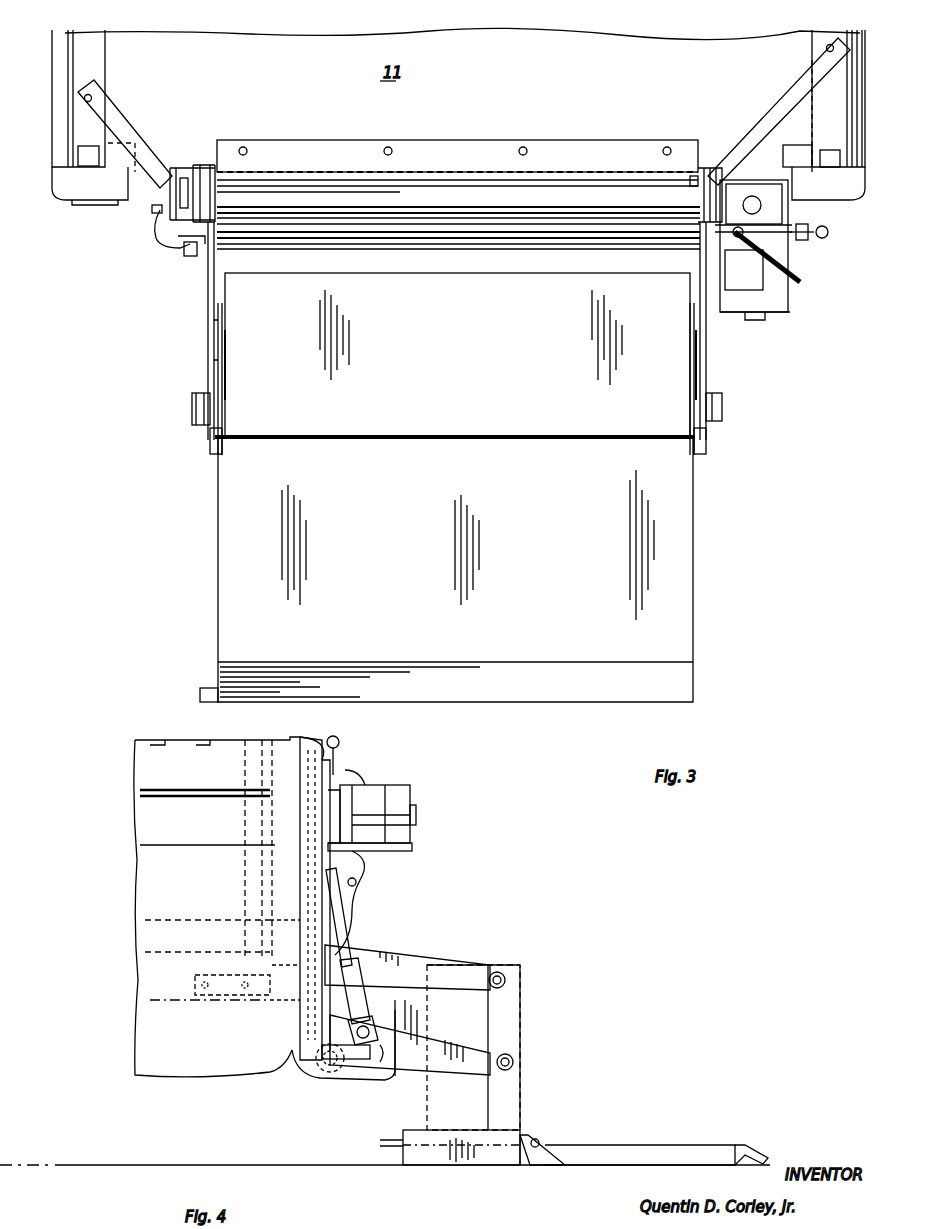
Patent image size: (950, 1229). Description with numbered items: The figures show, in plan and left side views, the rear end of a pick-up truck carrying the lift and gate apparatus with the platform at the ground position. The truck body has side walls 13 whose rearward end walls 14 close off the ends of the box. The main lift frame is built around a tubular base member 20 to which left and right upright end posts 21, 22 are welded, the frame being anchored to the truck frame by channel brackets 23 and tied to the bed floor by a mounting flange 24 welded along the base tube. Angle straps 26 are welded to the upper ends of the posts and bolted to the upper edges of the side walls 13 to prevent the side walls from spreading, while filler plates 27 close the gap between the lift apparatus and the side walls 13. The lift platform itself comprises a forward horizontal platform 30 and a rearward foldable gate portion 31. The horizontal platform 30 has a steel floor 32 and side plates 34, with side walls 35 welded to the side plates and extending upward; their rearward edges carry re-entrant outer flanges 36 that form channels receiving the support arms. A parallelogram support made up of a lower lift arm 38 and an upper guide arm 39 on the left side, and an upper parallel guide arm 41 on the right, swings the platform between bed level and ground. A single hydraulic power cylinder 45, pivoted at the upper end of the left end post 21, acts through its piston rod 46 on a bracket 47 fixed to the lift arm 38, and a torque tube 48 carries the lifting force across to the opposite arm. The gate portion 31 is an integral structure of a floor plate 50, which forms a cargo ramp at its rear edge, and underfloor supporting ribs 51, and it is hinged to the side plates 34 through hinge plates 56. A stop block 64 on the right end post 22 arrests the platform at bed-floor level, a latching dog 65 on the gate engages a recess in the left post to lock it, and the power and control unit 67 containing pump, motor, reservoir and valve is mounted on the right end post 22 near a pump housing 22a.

In FIG. 3, the side walls 13 is at (80, 55).
In FIG. 4, the side walls 13 is at (142, 817).
In FIG. 3, the rearward end walls 14 is at (56, 195).
In FIG. 3, the base member 20 is at (519, 232).
In FIG. 3, the left end post 21 is at (180, 168).
In FIG. 4, the left end post 21 is at (308, 740).
In FIG. 3, the right end post 22 is at (722, 172).
In FIG. 3, the pump housing 22a is at (690, 232).
In FIG. 4, the brackets 23 is at (218, 976).
In FIG. 3, the mounting flange 24 is at (576, 150).
In FIG. 3, the angle straps 26 is at (110, 120).
In FIG. 3, the filler plates 27 is at (203, 165).
In FIG. 3, the horizontal platform 30 is at (216, 341).
In FIG. 4, the horizontal platform 30 is at (494, 1164).
In FIG. 3, the foldable gate portion 31 is at (216, 563).
In FIG. 4, the foldable gate portion 31 is at (616, 1164).
In FIG. 3, the floor 32 is at (446, 292).
In FIG. 4, the floor 32 is at (378, 1142).
In FIG. 3, the side plates 34 is at (226, 318).
In FIG. 4, the side plates 34 is at (426, 1166).
In FIG. 3, the side walls 35 is at (228, 378).
In FIG. 4, the side walls 35 is at (434, 1004).
In FIG. 3, the re-entrant outer flanges 36 is at (204, 426).
In FIG. 4, the re-entrant outer flanges 36 is at (504, 1016).
In FIG. 4, the lower lift arm 38 is at (398, 1080).
In FIG. 3, the upper guide arm 39 is at (206, 300).
In FIG. 4, the upper guide arm 39 is at (410, 958).
In FIG. 3, the upper parallel guide arm 41 is at (706, 330).
In FIG. 3, the power cylinder 45 is at (168, 225).
In FIG. 4, the power cylinder 45 is at (356, 893).
In FIG. 4, the piston rod 46 is at (348, 996).
In FIG. 3, the bracket 47 is at (182, 262).
In FIG. 4, the bracket 47 is at (376, 1062).
In FIG. 4, the torque tube 48 is at (308, 1072).
In FIG. 4, the floor plate 50 is at (650, 1124).
In FIG. 4, the underfloor supporting ribs 51 is at (718, 1144).
In FIG. 4, the hinge plates 56 is at (540, 1152).
In FIG. 3, the stop block 64 is at (688, 184).
In FIG. 3, the latching dog 65 is at (205, 688).
In FIG. 3, the power and control unit 67 is at (826, 241).
In FIG. 4, the power and control unit 67 is at (392, 784).